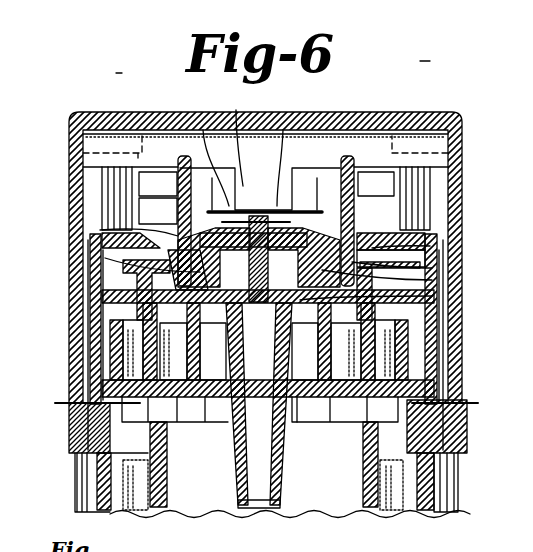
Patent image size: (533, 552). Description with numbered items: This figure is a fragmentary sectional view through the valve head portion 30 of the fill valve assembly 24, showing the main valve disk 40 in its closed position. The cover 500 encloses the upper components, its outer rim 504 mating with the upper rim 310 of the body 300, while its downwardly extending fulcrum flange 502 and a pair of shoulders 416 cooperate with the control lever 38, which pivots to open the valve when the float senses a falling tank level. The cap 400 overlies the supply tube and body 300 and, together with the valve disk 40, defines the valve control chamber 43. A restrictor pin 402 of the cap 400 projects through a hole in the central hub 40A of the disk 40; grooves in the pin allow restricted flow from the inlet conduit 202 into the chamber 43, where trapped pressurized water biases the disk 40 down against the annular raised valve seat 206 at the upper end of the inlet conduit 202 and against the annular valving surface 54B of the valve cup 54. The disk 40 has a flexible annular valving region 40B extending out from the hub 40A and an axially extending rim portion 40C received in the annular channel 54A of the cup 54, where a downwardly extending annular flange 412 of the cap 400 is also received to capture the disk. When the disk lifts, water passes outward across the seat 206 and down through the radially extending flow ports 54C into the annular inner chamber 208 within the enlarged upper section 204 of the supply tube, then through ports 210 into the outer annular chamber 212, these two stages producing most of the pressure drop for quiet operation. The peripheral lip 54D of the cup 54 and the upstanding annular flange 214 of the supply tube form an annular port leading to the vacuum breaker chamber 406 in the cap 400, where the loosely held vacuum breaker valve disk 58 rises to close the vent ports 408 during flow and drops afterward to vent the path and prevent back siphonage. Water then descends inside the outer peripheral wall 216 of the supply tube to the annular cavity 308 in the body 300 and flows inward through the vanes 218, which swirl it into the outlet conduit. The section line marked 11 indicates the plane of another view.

The fill valve assembly 24 is at (120, 62).
The valve head portion 30 is at (425, 60).
The control lever 38 is at (252, 182).
The main valve disk 40 is at (440, 264).
The central hub 40A is at (139, 198).
The flexible annular valving region 40B is at (394, 198).
The axially extending rim portion 40C is at (105, 270).
The valve control chamber 43 is at (256, 227).
The valve cup 54 is at (382, 285).
The annular channel 54A is at (135, 303).
The annular valving surface 54B is at (139, 217).
The radially extending flow ports 54C is at (432, 300).
The peripheral lip 54D is at (123, 264).
The vacuum breaker valve disk 58 is at (440, 226).
The section line 11 is at (264, 390).
The inlet conduit 202 is at (280, 516).
The enlarged upper section 204 is at (100, 358).
The annular raised valve seat 206 is at (278, 214).
The annular inner chamber 208 is at (320, 422).
The ports 210 is at (240, 350).
The outer annular chamber 212 is at (408, 342).
The upstanding annular flange 214 is at (432, 262).
The outer peripheral wall 216 is at (410, 388).
The vanes 218 is at (210, 422).
The body 300 is at (66, 486).
The annular cavity 308 is at (418, 514).
The upper rim 310 is at (468, 444).
The cap 400 is at (412, 250).
The restrictor pin 402 is at (255, 302).
The vacuum breaker chamber 406 is at (110, 250).
The vent ports 408 is at (120, 233).
The downwardly extending annular flange 412 is at (150, 287).
The shoulders 416 is at (284, 130).
The cover 500 is at (425, 112).
The downwardly extending fulcrum flange 502 is at (245, 134).
The outer rim 504 is at (82, 446).